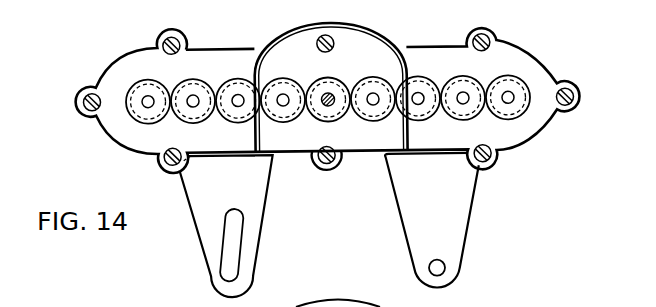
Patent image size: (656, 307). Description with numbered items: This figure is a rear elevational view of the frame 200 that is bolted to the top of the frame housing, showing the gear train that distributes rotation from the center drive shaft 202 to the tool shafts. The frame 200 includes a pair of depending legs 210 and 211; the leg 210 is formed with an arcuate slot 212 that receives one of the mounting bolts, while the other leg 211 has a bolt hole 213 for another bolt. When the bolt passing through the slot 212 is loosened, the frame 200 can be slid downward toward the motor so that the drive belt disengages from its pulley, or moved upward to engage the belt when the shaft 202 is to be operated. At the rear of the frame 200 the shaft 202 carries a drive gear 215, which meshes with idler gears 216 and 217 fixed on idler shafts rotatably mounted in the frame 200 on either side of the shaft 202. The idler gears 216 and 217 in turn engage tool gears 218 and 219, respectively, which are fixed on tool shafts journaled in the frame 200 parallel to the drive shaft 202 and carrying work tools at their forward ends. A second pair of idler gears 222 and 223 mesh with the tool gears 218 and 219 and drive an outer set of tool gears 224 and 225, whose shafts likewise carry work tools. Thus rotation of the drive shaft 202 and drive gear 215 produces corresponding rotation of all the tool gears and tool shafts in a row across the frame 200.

The frame 200 is at (263, 47).
The center drive shaft 202 is at (328, 104).
The leg 210 is at (192, 188).
The leg 211 is at (456, 216).
The arcuate slot 212 is at (233, 249).
The bolt hole 213 is at (443, 269).
The drive gear 215 is at (335, 125).
The idler gear 216 is at (275, 74).
The idler gear 217 is at (381, 76).
The tool gear 218 is at (245, 76).
The tool gear 219 is at (415, 63).
The idler gear 222 is at (189, 121).
The idler gear 223 is at (462, 124).
The tool gear 224 is at (169, 78).
The tool gear 225 is at (528, 74).